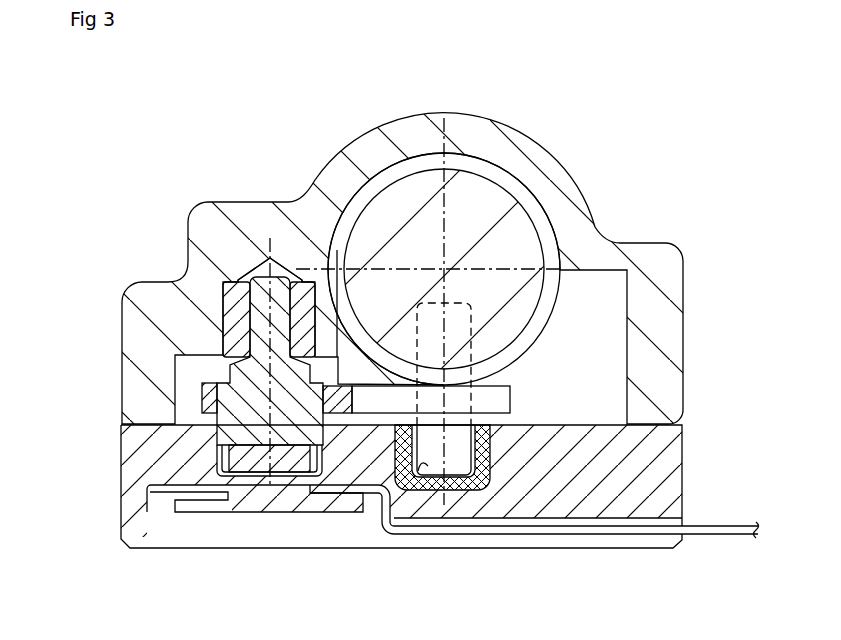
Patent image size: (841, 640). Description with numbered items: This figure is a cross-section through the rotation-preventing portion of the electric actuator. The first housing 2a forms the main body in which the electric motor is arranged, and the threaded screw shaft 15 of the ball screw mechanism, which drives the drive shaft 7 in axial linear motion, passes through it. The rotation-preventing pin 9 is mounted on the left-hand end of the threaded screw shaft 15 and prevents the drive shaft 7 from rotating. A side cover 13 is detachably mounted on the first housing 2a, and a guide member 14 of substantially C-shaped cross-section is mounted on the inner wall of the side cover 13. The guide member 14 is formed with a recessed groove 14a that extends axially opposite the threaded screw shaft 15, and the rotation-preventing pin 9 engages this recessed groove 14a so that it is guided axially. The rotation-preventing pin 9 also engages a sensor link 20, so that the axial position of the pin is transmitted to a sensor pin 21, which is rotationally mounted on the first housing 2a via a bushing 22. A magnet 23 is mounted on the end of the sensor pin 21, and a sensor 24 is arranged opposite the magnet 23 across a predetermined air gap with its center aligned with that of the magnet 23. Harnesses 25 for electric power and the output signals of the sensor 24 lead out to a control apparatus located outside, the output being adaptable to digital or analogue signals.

The first housing 2a is at (398, 128).
The threaded screw shaft 15 is at (484, 190).
The drive shaft 7 is at (444, 227).
The rotation-preventing pin 9 is at (487, 372).
The bushing 22 is at (226, 330).
The sensor pin 21 is at (226, 400).
The magnet 23 is at (253, 467).
The sensor link 20 is at (503, 400).
The side cover 13 is at (660, 477).
The guide member 14 is at (466, 490).
The recessed groove 14a is at (421, 466).
The sensor 24 is at (195, 508).
The harnesses 25 is at (652, 537).